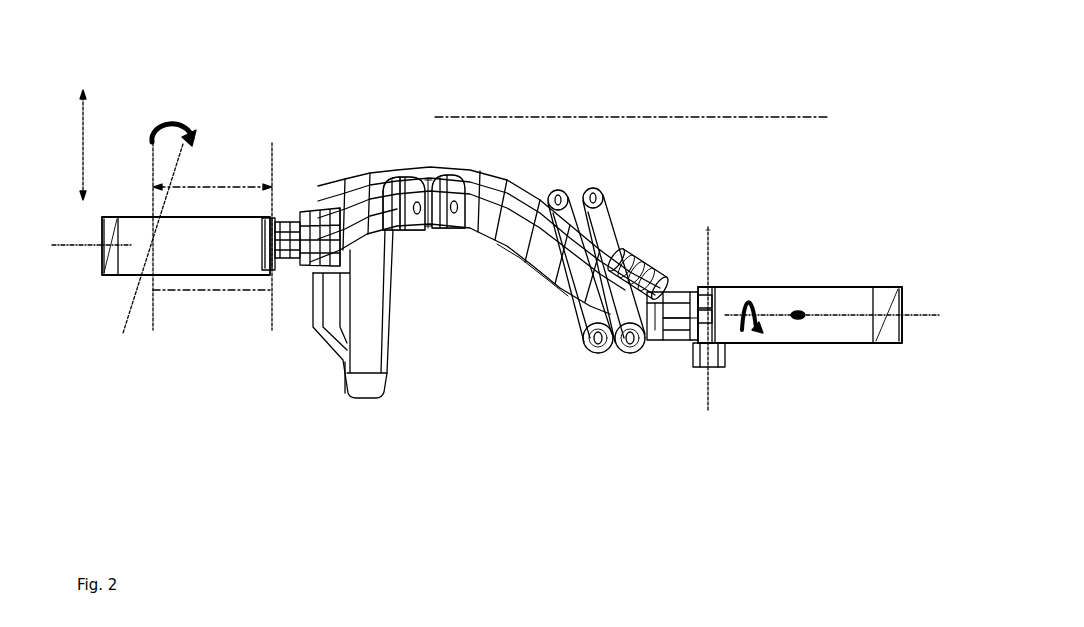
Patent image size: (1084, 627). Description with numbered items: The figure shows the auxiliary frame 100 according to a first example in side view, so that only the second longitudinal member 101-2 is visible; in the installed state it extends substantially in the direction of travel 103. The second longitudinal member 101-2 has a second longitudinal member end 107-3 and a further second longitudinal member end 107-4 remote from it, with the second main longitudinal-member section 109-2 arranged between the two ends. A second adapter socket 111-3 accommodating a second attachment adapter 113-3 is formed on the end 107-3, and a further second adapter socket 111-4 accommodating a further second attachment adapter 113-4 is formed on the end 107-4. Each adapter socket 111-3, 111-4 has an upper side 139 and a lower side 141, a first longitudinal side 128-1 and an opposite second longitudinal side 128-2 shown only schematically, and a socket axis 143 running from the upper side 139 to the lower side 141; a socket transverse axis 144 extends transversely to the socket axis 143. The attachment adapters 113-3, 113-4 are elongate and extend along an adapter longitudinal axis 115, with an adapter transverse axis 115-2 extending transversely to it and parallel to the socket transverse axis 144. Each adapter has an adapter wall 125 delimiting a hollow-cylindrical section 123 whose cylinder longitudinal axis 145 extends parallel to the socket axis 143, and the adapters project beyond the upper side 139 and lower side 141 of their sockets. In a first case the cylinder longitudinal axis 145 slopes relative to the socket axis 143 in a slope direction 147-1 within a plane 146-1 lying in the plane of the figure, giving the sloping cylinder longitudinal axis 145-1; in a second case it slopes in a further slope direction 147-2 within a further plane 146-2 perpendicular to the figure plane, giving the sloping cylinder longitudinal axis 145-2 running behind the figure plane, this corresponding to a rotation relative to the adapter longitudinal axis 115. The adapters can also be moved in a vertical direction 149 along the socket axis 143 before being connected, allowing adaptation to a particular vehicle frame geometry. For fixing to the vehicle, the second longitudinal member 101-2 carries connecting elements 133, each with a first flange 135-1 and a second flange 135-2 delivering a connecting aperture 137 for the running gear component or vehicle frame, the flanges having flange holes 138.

The auxiliary frame 100 is at (336, 91).
The direction of travel 103 is at (693, 114).
The second longitudinal member 101-2 is at (506, 194).
The second longitudinal member end 107-3 is at (306, 222).
The further second longitudinal member end 107-4 is at (657, 268).
The second main longitudinal-member section 109-2 is at (524, 256).
The second adapter socket 111-3 is at (270, 264).
The further second adapter socket 111-4 is at (668, 290).
The second attachment adapter 113-3 is at (126, 262).
The further second attachment adapter 113-4 is at (887, 300).
The adapter longitudinal axis 115 is at (72, 252).
The adapter transverse axis 115-2 is at (803, 312).
The hollow-cylindrical section 123 is at (130, 236).
The adapter wall 125 is at (886, 322).
The first longitudinal side 128-1 is at (670, 318).
The second longitudinal side 128-2 is at (686, 290).
The connecting element 133 is at (417, 232).
The first flange 135-1 is at (498, 290).
The second flange 135-2 is at (544, 299).
The connecting aperture 137 is at (412, 178).
The flange holes 138 is at (460, 180).
The upper side 139 is at (276, 222).
The lower side 141 is at (273, 270).
The socket axis 143 is at (270, 186).
The socket transverse axis 144 is at (713, 312).
The cylinder longitudinal axis 145 is at (153, 322).
The sloping cylinder longitudinal axis 145-1 is at (124, 328).
The sloping cylinder longitudinal axis 145-2 is at (712, 250).
The plane 146-1 is at (216, 292).
The further plane 146-2 is at (742, 342).
The slope direction 147-1 is at (172, 124).
The further slope direction 147-2 is at (757, 297).
The vertical direction 149 is at (86, 130).